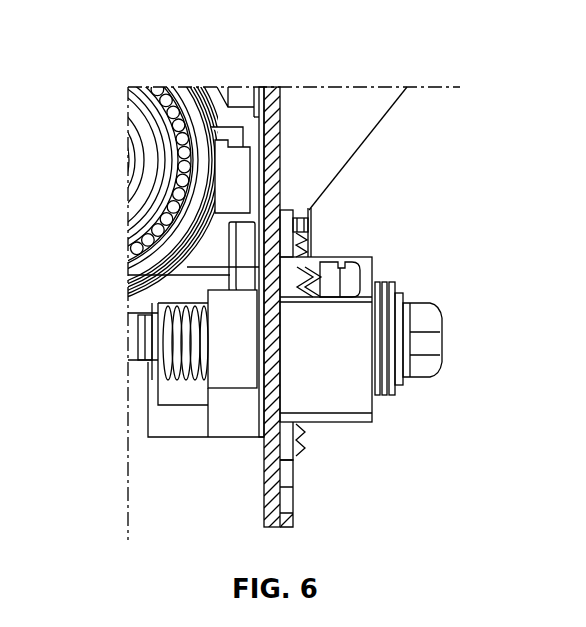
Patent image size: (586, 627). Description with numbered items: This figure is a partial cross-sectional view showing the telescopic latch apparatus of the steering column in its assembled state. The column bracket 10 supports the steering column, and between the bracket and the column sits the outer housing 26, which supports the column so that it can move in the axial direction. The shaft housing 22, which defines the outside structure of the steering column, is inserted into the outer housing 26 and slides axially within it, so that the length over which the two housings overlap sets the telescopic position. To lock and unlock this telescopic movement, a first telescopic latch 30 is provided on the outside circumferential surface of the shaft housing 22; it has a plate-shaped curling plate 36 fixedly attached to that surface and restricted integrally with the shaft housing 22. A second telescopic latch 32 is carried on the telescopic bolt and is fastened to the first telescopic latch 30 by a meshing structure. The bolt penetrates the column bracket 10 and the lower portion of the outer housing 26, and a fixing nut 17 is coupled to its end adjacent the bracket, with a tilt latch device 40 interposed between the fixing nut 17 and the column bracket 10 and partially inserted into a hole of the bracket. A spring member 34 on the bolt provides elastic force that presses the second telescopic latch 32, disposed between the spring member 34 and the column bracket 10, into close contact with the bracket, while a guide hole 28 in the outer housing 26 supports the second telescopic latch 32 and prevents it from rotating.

The column bracket 10 is at (272, 150).
The fixing nut 17 is at (420, 310).
The shaft housing 22 is at (198, 100).
The outer housing 26 is at (264, 87).
The guide hole 28 is at (227, 425).
The first telescopic latch 30 is at (217, 250).
The second telescopic latch 32 is at (222, 377).
The spring member 34 is at (168, 332).
The curling plate 36 is at (228, 180).
The tilt latch device 40 is at (345, 440).